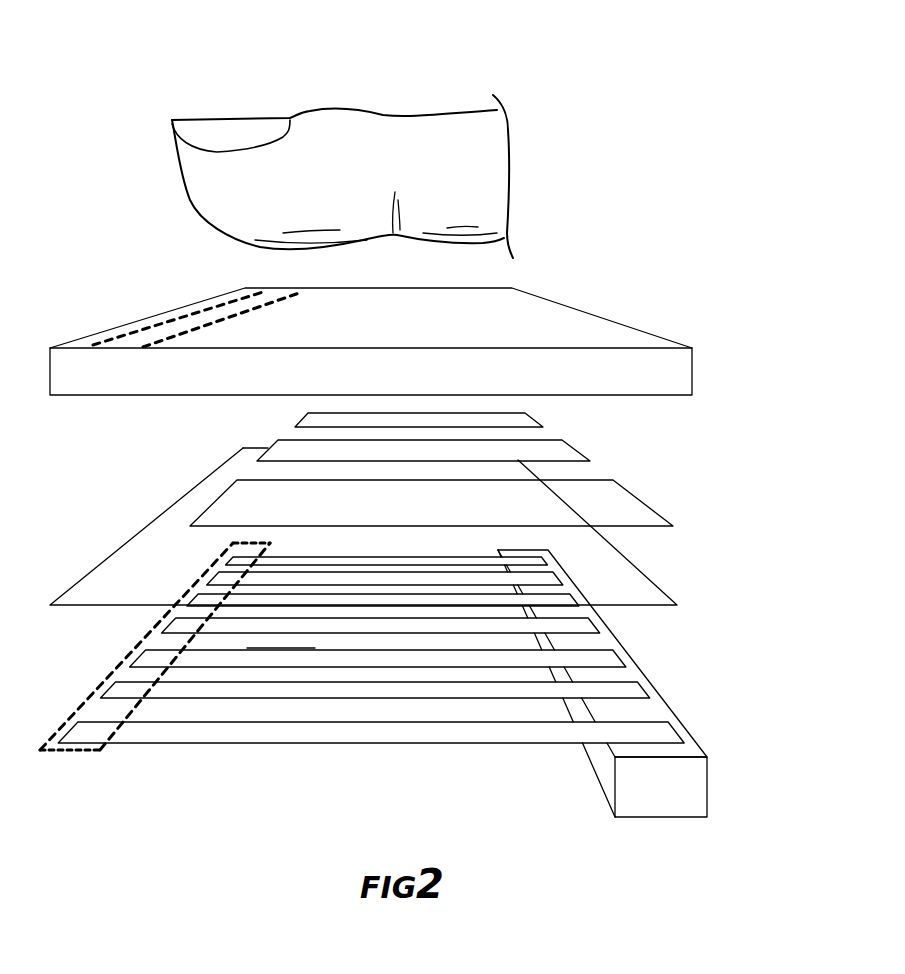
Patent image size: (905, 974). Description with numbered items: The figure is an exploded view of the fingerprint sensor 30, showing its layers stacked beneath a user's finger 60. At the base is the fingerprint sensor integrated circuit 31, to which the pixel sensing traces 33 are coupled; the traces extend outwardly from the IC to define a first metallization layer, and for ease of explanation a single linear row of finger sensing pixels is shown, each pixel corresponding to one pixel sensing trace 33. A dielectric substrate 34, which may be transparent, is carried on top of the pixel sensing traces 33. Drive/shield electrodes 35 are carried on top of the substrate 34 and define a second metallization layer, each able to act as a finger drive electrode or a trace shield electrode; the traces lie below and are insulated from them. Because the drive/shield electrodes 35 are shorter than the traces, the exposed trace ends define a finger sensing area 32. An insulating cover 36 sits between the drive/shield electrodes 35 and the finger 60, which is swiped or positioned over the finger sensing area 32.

The user's finger 60 is at (426, 117).
The fingerprint sensor 30 is at (724, 320).
The insulating cover 36 is at (682, 375).
The pixel sensing traces 33 is at (150, 323).
The drive/shield electrodes 35 is at (531, 423).
The substrate 34 is at (633, 587).
The finger sensing area 32 is at (605, 657).
The fingerprint sensor integrated circuit 31 is at (707, 785).